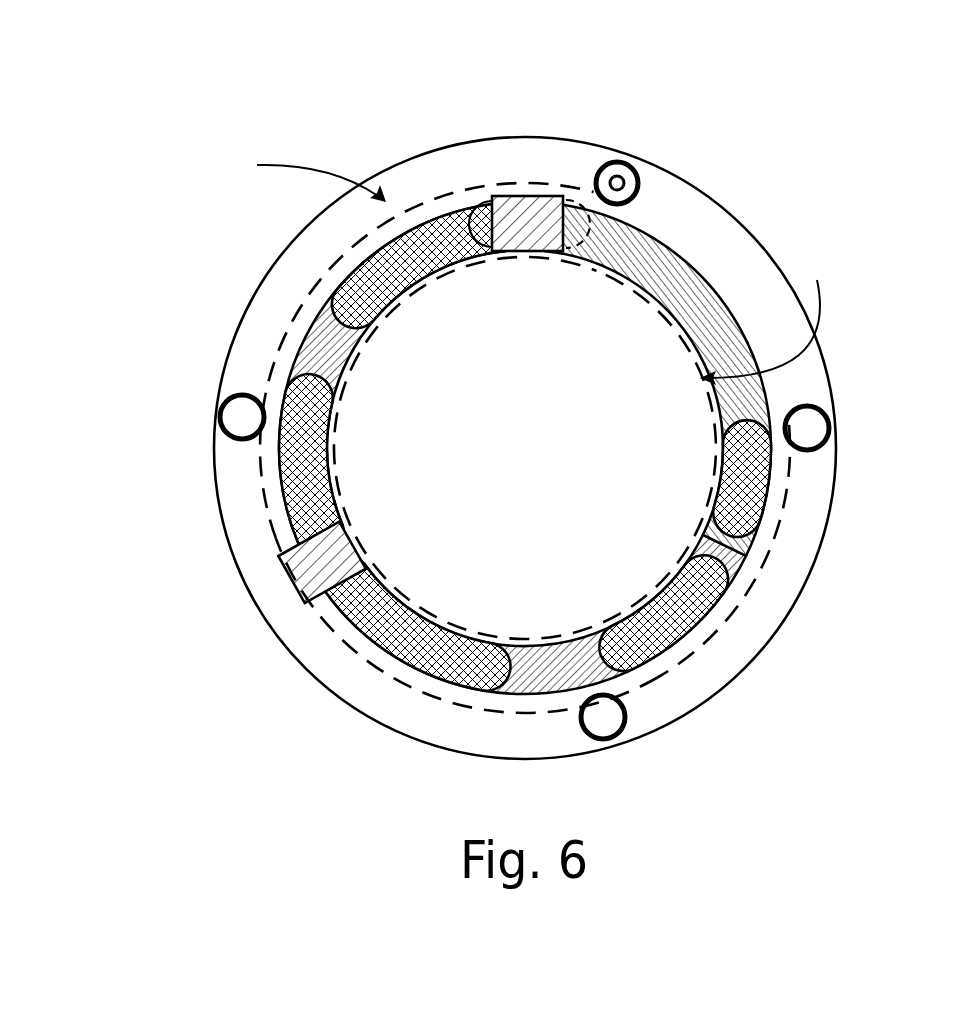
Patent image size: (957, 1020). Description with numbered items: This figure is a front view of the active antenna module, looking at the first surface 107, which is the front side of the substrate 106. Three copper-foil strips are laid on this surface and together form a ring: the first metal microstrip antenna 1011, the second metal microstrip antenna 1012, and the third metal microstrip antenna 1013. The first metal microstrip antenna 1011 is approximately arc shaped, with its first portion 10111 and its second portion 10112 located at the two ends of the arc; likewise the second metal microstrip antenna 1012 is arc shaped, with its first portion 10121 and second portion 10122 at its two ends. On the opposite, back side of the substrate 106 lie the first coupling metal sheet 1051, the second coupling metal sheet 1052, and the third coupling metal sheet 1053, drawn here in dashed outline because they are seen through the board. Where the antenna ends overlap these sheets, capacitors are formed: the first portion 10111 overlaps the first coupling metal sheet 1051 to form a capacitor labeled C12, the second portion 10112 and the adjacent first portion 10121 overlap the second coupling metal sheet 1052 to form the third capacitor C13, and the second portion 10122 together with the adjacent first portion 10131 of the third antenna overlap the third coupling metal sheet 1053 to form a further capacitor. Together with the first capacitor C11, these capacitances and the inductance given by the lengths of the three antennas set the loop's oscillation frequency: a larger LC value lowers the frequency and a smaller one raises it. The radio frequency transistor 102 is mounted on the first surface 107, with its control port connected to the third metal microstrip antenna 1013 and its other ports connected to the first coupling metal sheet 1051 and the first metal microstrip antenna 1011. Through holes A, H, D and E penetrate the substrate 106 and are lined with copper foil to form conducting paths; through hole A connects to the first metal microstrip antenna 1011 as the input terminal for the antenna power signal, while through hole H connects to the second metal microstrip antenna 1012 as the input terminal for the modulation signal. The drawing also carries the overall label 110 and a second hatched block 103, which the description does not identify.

The motor assembly 110 is at (523, 92).
The substrate 106 is at (252, 377).
The radio frequency transistor 102 is at (523, 196).
The second block 103 is at (292, 583).
The first metal microstrip antenna 1011 is at (310, 360).
The second metal microstrip antenna 1012 is at (552, 683).
The third metal microstrip antenna 1013 is at (697, 293).
The first portion of the first metal microstrip antenna 10111 is at (392, 263).
The second portion of the first metal microstrip antenna 10112 is at (300, 447).
The first portion of the second metal microstrip antenna 10121 is at (380, 607).
The second portion of the second metal microstrip antenna 10122 is at (693, 587).
The first portion of the third metal microstrip antenna 10131 is at (743, 505).
The first coupling metal sheet 1051 is at (337, 264).
The second coupling metal sheet 1052 is at (272, 537).
The third coupling metal sheet 1053 is at (778, 515).
The first surface 107 is at (777, 316).
The first capacitor C11 is at (289, 174).
The second capacitor C12 is at (588, 466).
The third capacitor C13 is at (446, 494).
The through hole A is at (242, 441).
The through hole E is at (630, 192).
The through hole D is at (807, 452).
The through hole H is at (624, 714).